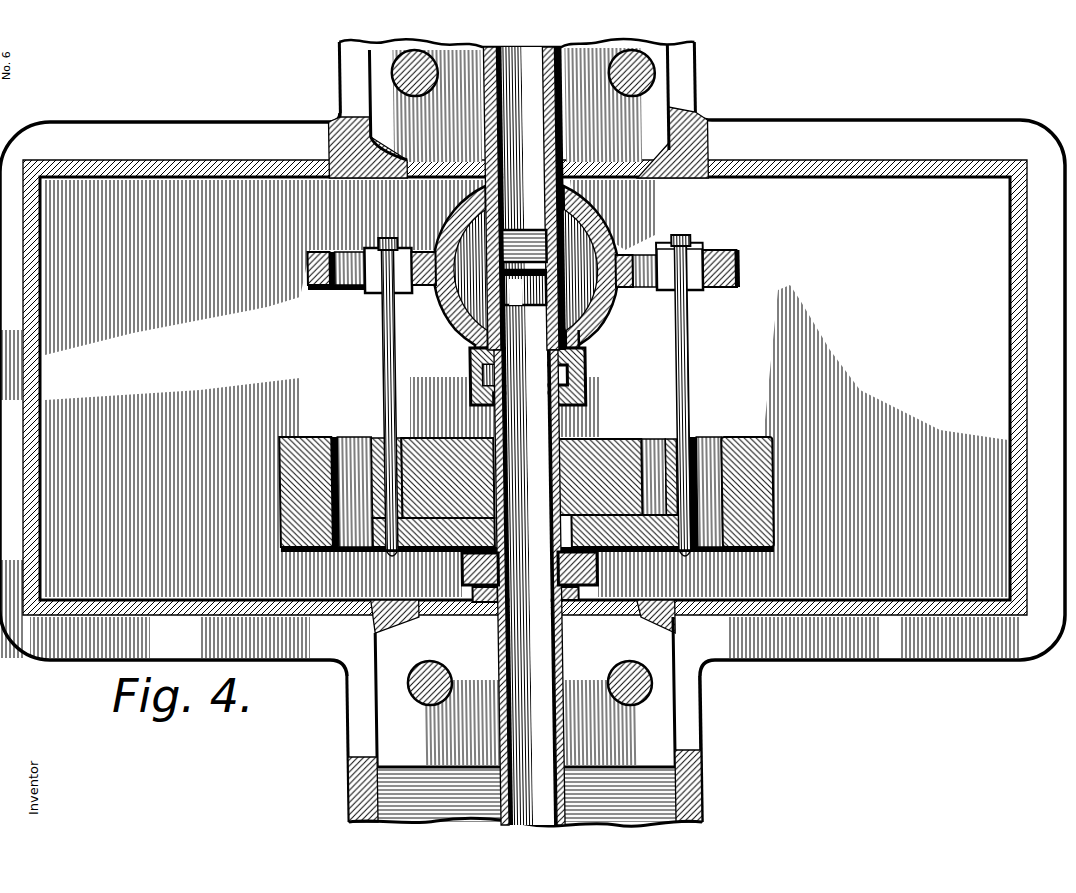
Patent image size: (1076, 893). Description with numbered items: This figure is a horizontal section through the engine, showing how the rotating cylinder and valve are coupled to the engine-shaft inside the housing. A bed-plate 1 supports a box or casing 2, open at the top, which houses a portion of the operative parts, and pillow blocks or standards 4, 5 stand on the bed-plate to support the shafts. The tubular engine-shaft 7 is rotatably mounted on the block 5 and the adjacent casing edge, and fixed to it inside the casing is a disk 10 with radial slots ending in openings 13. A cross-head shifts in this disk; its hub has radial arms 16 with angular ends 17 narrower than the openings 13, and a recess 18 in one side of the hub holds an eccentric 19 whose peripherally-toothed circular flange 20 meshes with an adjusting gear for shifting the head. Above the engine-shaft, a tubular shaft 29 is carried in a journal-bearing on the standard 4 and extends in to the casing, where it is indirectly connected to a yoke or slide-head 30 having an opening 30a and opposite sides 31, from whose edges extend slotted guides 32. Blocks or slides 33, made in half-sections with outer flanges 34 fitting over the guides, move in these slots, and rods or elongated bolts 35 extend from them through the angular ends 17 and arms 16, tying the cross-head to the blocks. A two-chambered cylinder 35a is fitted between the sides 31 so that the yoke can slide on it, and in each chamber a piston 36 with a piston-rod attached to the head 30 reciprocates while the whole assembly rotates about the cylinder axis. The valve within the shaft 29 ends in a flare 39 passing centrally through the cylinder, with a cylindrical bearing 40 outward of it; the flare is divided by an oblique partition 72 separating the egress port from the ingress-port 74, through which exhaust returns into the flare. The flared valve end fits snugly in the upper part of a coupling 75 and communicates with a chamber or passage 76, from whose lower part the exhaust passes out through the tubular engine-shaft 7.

The bed-plate 1 is at (830, 661).
The box or casing 2 is at (526, 388).
The pillow block or standard 4 is at (677, 83).
The pillow block or standard 5 is at (663, 717).
The engine-shaft 7 is at (525, 436).
The disk 10 is at (747, 480).
The openings 13 is at (504, 480).
The radial arms 16 is at (664, 550).
The angular ends 17 is at (408, 438).
The recess 18 is at (632, 522).
The eccentric 19 is at (588, 498).
The peripherally-toothed circular flange 20 is at (477, 587).
The tubular shaft 29 is at (575, 110).
The yoke or slide-head 30 is at (422, 291).
The opening 30a is at (626, 286).
The sides 31 is at (630, 252).
The slotted guides 32 is at (322, 297).
The blocks or slides 33 is at (405, 300).
The outer flanges 34 is at (364, 296).
The rods or elongated bolts 35 is at (691, 363).
The cylinder 35a is at (591, 318).
The piston 36 is at (478, 318).
The flare 39 is at (521, 303).
The cylindrical bearing 40 is at (491, 153).
The partition 72 is at (533, 252).
The ingress-port 74 is at (481, 341).
The coupling 75 is at (550, 376).
The chamber or passage 76 is at (525, 377).